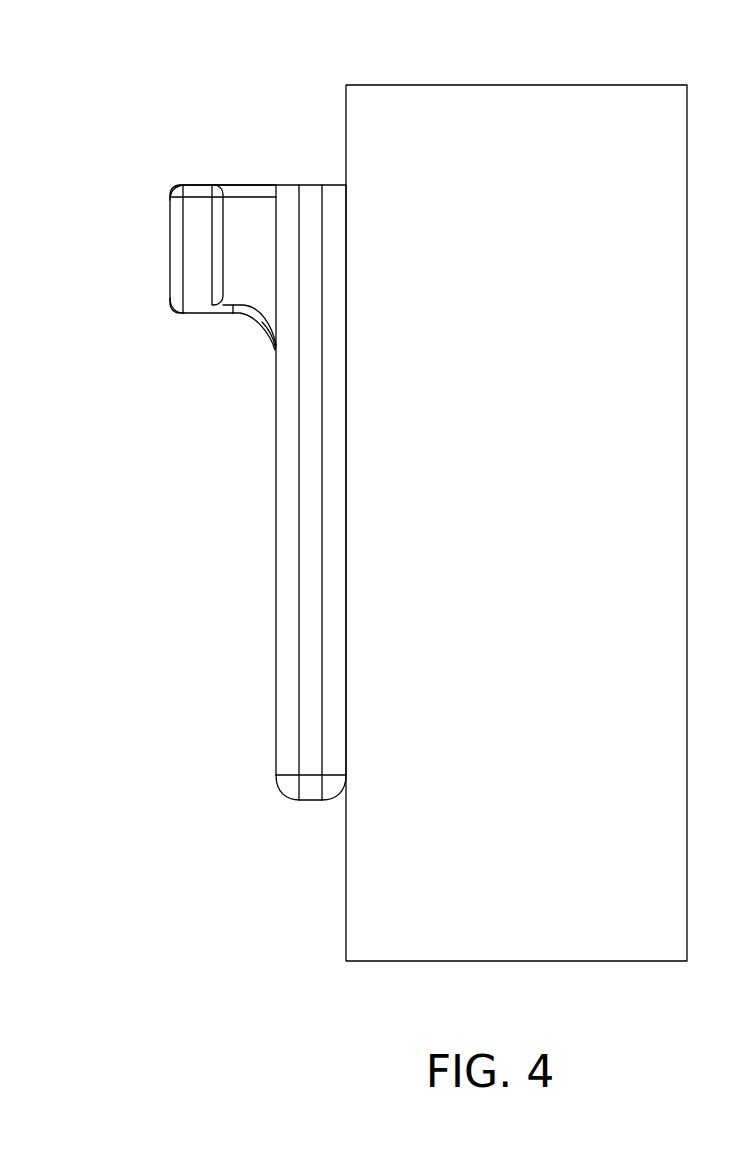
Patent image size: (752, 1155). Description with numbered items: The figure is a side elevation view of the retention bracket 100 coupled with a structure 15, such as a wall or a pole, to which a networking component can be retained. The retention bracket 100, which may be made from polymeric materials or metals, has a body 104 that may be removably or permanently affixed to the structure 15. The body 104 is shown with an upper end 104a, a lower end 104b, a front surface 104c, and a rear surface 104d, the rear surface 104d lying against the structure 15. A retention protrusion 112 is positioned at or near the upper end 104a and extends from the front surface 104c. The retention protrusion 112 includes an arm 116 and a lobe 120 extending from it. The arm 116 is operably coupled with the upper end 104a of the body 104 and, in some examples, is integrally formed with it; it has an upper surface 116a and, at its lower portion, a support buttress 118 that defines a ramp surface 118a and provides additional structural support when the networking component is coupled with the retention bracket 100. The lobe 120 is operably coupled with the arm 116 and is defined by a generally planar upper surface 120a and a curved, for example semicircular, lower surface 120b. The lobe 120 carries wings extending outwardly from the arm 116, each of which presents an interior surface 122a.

The structure 15 is at (561, 85).
The retention bracket 100 is at (276, 722).
The body 104 is at (313, 542).
The upper end 104a is at (312, 173).
The lower end 104b is at (297, 817).
The front surface 104c is at (264, 615).
The rear surface 104d is at (359, 210).
The retention protrusion 112 is at (130, 186).
The arm 116 is at (252, 218).
The upper surface 116a is at (234, 175).
The support buttress 118 is at (270, 323).
The ramp surface 118a is at (253, 324).
The lobe 120 is at (178, 303).
The upper surface 120a is at (178, 178).
The lower surface 120b is at (199, 323).
The interior surface 122a is at (236, 253).